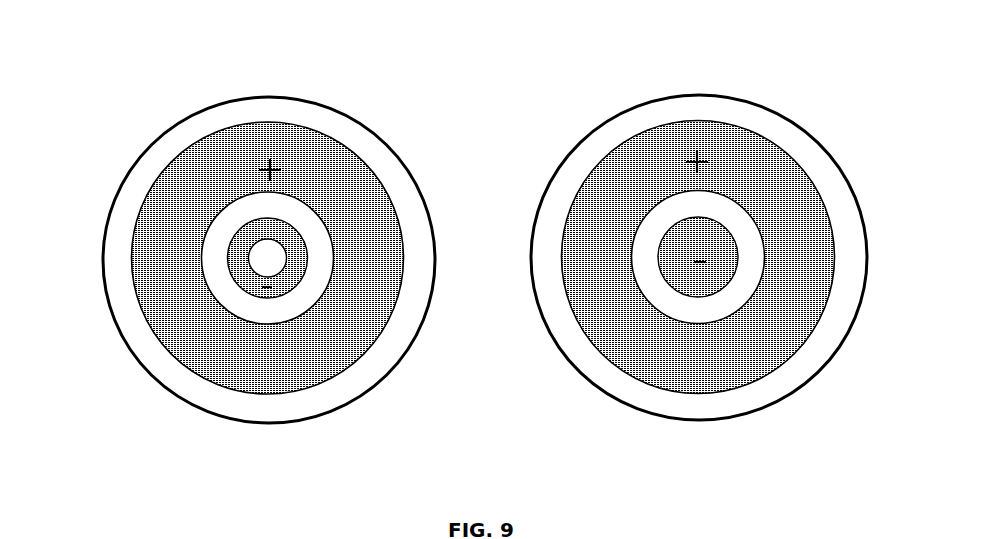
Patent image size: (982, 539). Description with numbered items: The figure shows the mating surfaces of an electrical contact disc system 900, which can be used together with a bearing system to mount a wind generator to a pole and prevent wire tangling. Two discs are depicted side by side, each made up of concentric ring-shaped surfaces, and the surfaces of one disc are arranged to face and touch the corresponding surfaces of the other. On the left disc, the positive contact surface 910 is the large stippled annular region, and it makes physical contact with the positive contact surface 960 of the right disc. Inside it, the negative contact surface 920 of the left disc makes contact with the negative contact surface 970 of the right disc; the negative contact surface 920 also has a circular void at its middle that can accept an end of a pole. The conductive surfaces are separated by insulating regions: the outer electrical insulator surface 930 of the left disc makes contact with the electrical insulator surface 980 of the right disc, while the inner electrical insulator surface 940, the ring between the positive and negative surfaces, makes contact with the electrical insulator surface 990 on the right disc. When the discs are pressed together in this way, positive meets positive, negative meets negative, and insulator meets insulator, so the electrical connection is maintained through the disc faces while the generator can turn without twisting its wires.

The electrical contact disc system 900 is at (507, 56).
The positive contact surface 910 is at (160, 192).
The negative contact surface 920 is at (250, 280).
The electrical insulator surface 930 is at (377, 382).
The electrical insulator surface 940 is at (288, 313).
The positive contact surface 960 is at (597, 220).
The negative contact surface 970 is at (713, 273).
The electrical insulator surface 980 is at (560, 328).
The electrical insulator surface 990 is at (695, 313).